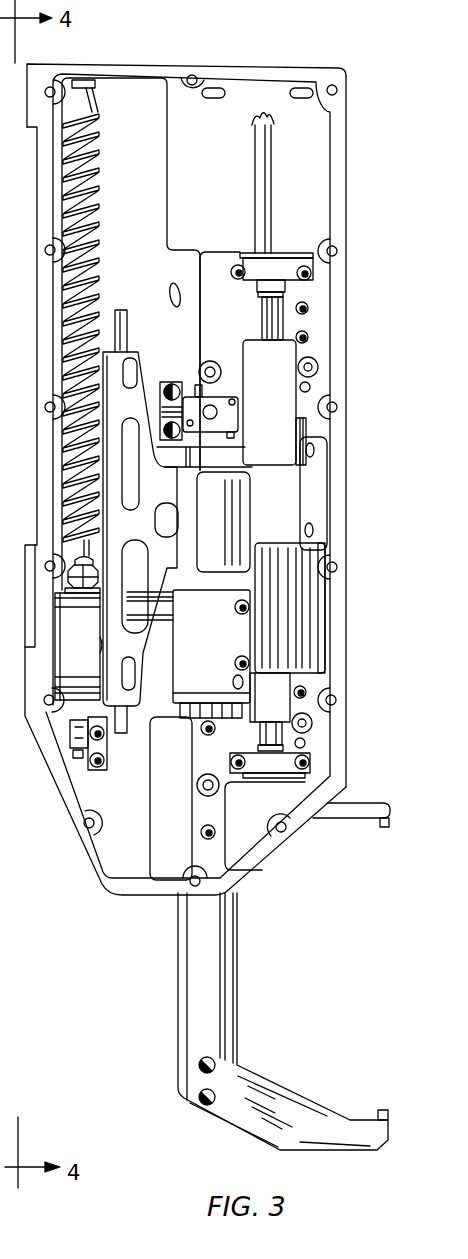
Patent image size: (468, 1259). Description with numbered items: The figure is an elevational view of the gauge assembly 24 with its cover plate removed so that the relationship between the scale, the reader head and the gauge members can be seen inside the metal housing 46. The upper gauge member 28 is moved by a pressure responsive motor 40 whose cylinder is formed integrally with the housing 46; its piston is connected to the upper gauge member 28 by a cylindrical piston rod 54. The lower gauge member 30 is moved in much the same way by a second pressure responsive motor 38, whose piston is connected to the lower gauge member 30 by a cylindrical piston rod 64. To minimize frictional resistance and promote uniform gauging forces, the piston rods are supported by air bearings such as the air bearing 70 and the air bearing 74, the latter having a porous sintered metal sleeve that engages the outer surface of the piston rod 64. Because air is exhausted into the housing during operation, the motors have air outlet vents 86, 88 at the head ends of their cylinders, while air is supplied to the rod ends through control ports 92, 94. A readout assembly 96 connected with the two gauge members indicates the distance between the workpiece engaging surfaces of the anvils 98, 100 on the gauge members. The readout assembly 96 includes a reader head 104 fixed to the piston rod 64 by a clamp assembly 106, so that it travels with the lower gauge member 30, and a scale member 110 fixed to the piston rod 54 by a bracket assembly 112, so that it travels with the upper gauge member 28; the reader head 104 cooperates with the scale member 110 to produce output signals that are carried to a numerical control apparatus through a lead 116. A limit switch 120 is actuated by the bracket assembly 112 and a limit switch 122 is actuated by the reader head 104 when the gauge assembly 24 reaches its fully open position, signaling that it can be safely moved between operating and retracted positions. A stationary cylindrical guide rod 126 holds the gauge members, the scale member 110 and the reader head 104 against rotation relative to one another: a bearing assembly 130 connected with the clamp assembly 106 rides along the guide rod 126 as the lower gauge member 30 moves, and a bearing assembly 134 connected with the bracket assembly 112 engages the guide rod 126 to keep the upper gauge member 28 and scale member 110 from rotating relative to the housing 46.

The gauge assembly 24 is at (352, 30).
The upper gauge member 28 is at (345, 812).
The lower gauge member 30 is at (288, 1103).
The pressure responsive motor 38 is at (187, 118).
The motor 40 is at (312, 147).
The metal housing 46 is at (388, 213).
The piston rod 54 is at (323, 607).
The piston rod 64 is at (210, 576).
The air bearing 70 is at (325, 746).
The air bearing 74 is at (167, 863).
The air outlet vent 86 is at (218, 80).
The air outlet vent 88 is at (307, 98).
The control port 92 is at (172, 282).
The control port 94 is at (290, 324).
The readout assembly 96 is at (66, 576).
The anvil 98 is at (382, 824).
The anvil 100 is at (399, 1088).
The reader head 104 is at (72, 695).
The clamp assembly 106 is at (241, 640).
The scale member 110 is at (117, 310).
The bracket assembly 112 is at (314, 498).
The lead 116 is at (96, 152).
The limit switch 120 is at (238, 418).
The limit switch 122 is at (83, 743).
The guide rod 126 is at (277, 573).
The bearing assembly 130 is at (274, 688).
The bearing assembly 134 is at (288, 386).